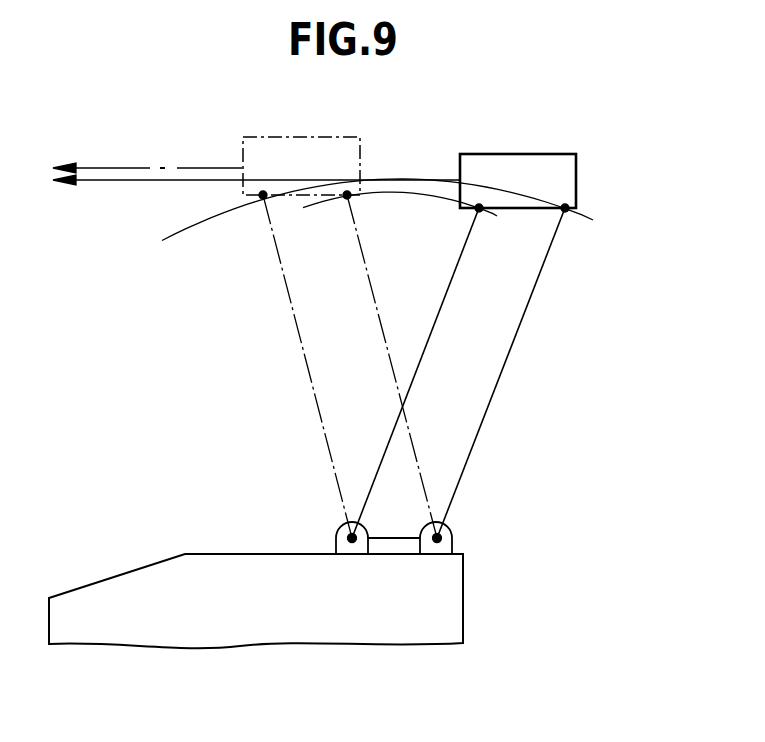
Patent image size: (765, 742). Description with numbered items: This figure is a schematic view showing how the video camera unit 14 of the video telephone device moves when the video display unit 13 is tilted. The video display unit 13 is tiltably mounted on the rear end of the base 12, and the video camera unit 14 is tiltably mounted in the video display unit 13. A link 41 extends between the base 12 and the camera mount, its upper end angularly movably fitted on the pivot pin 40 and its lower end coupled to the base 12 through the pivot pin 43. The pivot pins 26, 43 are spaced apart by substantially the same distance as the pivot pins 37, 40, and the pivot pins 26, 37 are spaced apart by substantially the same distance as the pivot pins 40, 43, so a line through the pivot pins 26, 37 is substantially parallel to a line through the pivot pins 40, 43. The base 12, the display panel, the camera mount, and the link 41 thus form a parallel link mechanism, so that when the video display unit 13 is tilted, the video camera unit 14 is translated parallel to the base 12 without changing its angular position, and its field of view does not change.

The base 12 is at (463, 592).
The video display unit 13 is at (295, 328).
The video camera unit 14 is at (330, 137).
The pivot pin 26 is at (347, 533).
The pivot pin 37 is at (263, 195).
The pivot pin 40 is at (350, 198).
The link 41 is at (370, 287).
The pivot pin 43 is at (442, 535).